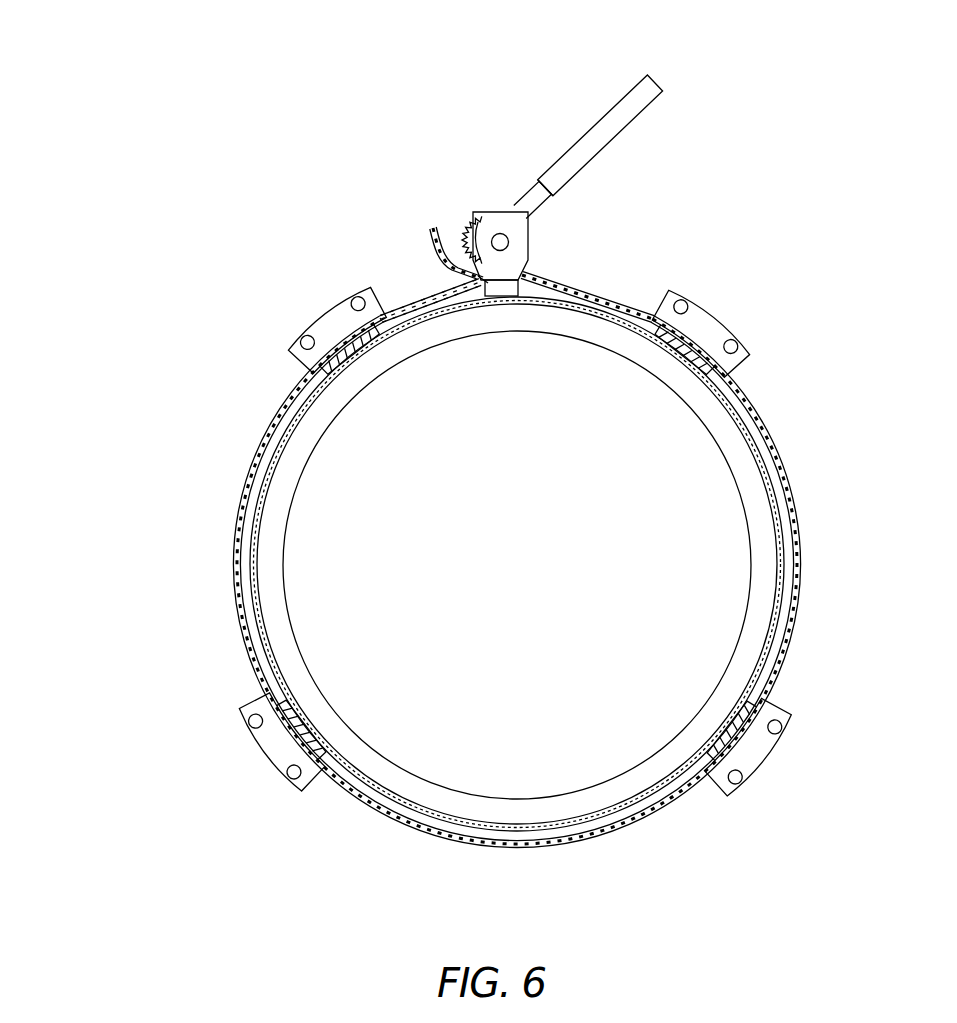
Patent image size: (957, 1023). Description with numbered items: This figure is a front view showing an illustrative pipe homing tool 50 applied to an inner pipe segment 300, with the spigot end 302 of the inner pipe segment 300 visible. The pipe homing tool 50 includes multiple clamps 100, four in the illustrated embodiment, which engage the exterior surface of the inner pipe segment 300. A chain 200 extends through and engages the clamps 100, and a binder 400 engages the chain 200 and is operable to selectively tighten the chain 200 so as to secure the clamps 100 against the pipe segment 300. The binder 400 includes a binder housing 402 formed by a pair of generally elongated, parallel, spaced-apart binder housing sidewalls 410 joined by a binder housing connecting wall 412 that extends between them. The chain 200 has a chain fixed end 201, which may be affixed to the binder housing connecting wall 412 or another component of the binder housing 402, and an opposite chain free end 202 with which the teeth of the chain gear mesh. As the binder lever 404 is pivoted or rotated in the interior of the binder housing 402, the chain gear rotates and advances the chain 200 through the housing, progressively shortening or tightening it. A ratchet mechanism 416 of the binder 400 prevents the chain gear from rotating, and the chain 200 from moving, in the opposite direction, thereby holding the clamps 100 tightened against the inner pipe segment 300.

The pipe homing tool 50 is at (323, 167).
The clamp 100 is at (325, 296).
The chain 200 is at (232, 560).
The chain fixed end 201 is at (483, 280).
The chain free end 202 is at (430, 230).
The inner pipe segment 300 is at (287, 417).
The spigot end 302 is at (275, 510).
The binder 400 is at (569, 158).
The binder housing 402 is at (532, 250).
The binder lever 404 is at (631, 115).
The binder housing sidewall 410 is at (520, 223).
The binder housing connecting wall 412 is at (513, 288).
The ratchet mechanism 416 is at (478, 197).